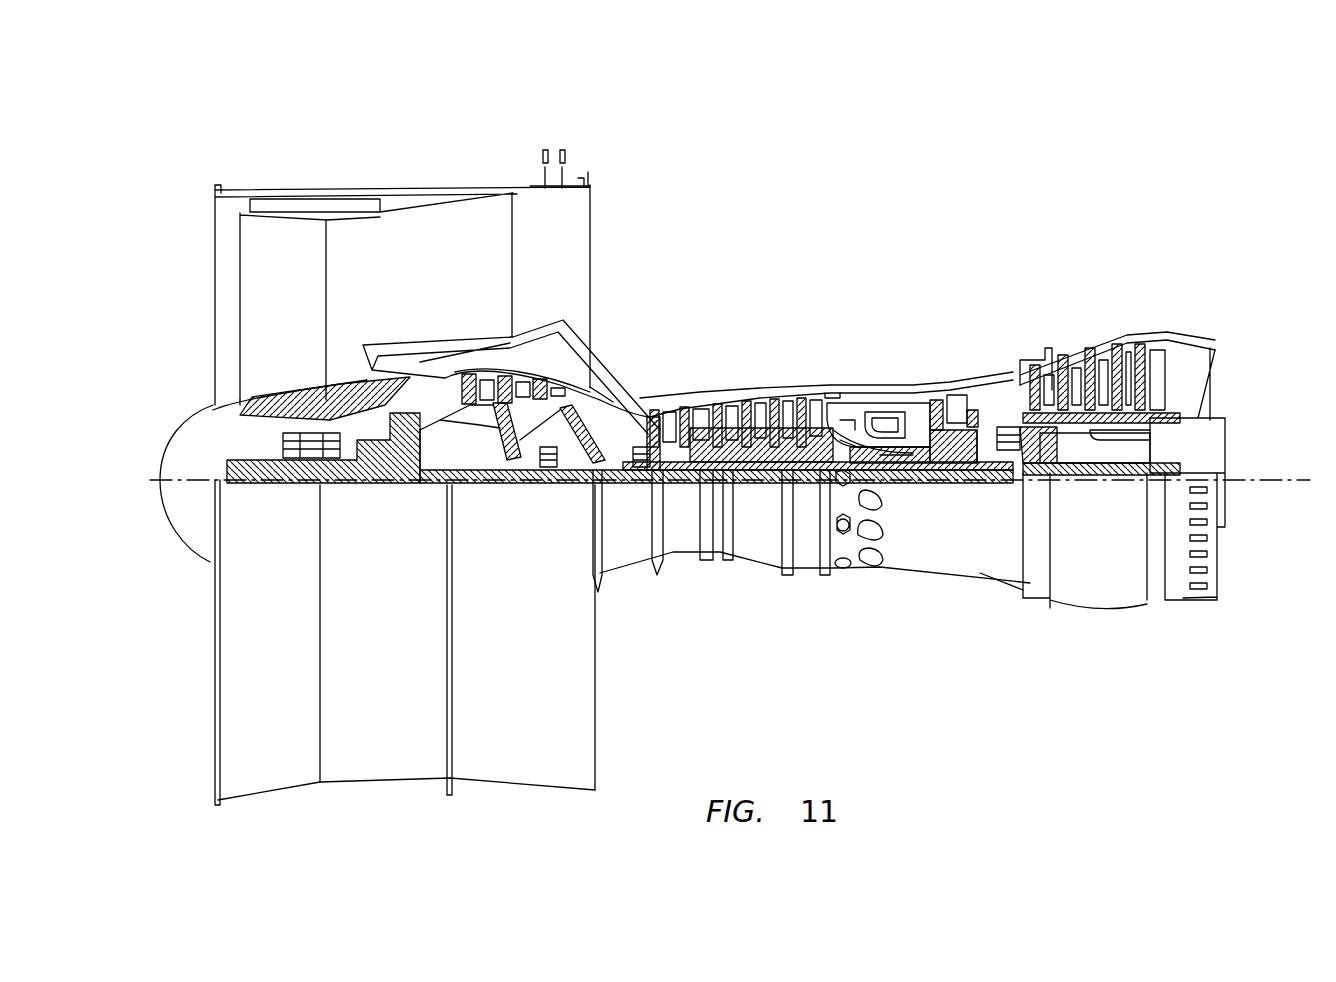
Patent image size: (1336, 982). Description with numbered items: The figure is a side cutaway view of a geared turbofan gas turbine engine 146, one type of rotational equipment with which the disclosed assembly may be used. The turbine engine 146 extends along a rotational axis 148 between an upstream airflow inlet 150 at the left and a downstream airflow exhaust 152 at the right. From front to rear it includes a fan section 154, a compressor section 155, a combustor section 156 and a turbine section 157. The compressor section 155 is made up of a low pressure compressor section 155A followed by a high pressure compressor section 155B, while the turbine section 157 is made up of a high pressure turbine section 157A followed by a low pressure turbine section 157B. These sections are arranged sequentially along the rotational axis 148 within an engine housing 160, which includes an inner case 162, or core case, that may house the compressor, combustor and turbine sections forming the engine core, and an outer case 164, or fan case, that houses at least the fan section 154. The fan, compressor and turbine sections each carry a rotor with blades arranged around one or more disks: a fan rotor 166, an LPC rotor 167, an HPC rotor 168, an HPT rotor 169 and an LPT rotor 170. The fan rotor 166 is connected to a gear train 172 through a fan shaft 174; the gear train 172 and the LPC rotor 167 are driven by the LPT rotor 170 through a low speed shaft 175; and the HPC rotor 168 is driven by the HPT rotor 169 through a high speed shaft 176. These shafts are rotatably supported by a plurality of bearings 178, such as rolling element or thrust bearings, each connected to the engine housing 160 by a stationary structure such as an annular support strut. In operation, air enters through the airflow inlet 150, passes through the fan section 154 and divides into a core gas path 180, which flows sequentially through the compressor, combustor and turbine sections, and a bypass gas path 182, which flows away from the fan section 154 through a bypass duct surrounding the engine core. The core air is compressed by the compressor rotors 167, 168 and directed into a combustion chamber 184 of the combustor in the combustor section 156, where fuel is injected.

The geared turbofan gas turbine engine 146 is at (166, 143).
The rotational axis 148 is at (1265, 470).
The upstream airflow inlet 150 is at (215, 262).
The downstream airflow exhaust 152 is at (1213, 375).
The fan section 154 is at (370, 163).
The compressor section 155 is at (805, 102).
The low pressure compressor (LPC) section 155A is at (598, 149).
The high pressure compressor (HPC) section 155B is at (805, 328).
The combustor section 156 is at (920, 328).
The turbine section 157 is at (1172, 253).
The high pressure turbine (HPT) section 157A is at (1000, 328).
The low pressure turbine (LPT) section 157B is at (1172, 328).
The engine housing 160 is at (630, 597).
The inner case 162 is at (804, 565).
The outer case 164 is at (552, 790).
The fan rotor 166 is at (215, 408).
The LPC rotor 167 is at (500, 430).
The HPC rotor 168 is at (760, 450).
The HPT rotor 169 is at (950, 470).
The LPT rotor 170 is at (1148, 443).
The gear train 172 is at (404, 485).
The fan shaft 174 is at (268, 485).
The low speed shaft 175 is at (1102, 483).
The high speed shaft 176 is at (893, 470).
The bearings 178 is at (297, 490).
The core gas path 180 is at (619, 410).
The bypass gas path 182 is at (444, 295).
The combustion chamber 184 is at (890, 410).